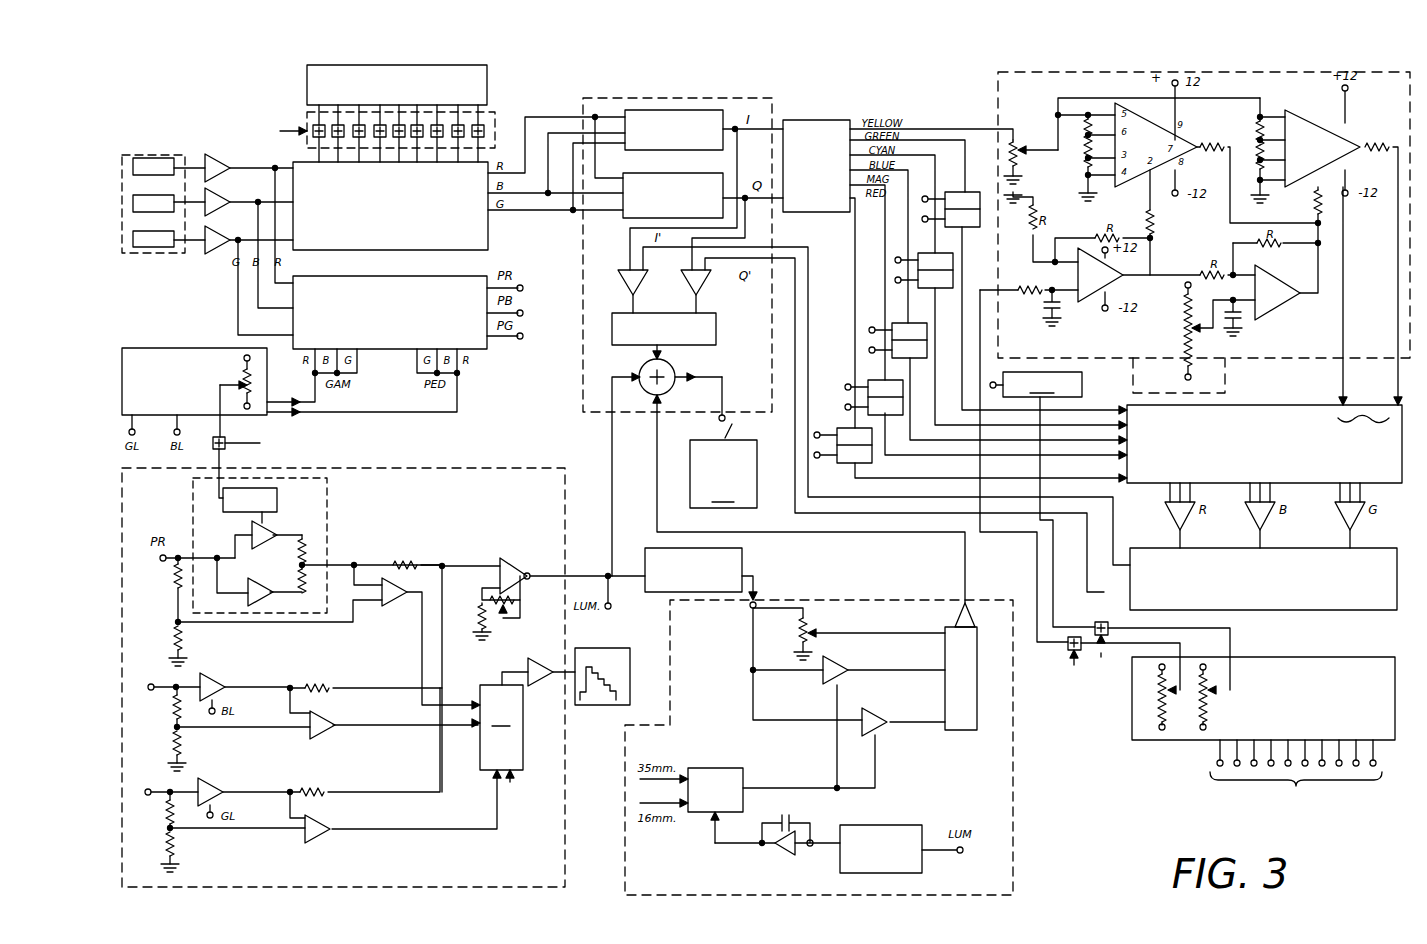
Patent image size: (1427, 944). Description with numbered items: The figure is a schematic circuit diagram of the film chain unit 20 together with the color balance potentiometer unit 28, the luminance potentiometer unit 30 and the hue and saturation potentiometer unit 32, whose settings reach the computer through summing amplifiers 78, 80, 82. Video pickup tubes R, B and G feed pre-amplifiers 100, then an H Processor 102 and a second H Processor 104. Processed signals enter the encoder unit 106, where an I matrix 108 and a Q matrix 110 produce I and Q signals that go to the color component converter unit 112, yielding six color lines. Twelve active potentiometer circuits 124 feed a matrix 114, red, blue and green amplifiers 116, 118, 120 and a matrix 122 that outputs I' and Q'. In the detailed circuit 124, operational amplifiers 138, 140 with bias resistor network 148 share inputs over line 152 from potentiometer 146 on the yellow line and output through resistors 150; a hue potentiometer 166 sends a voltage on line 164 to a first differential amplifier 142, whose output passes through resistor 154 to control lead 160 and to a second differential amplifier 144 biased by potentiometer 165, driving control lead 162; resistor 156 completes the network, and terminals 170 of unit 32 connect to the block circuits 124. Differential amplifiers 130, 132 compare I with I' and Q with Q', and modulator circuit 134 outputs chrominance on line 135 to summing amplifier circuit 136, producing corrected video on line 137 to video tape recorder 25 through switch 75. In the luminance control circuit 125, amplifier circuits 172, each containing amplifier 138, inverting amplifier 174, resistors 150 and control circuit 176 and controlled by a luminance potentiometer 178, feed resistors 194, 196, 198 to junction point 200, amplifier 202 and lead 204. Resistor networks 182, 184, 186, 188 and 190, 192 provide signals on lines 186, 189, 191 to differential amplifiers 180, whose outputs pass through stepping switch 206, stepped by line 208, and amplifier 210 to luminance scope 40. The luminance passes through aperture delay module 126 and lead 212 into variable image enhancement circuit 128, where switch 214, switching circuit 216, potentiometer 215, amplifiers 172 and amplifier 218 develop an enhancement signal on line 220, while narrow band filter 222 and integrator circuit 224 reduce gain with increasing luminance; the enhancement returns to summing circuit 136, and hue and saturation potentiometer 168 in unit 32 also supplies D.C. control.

The film chain unit 20 is at (211, 77).
The color balance potentiometer unit 28 is at (307, 89).
The summing amplifier 82 is at (496, 110).
The pre-amplifiers 100 is at (184, 139).
The H Processor 102 is at (375, 242).
The second H Processor 104 is at (375, 341).
The luminance potentiometer unit 30 is at (155, 409).
The luminance potentiometer 178 is at (255, 388).
The summing amplifier 80 is at (230, 440).
The control circuit 176 is at (260, 478).
The luminance control circuit 125 is at (376, 471).
The video frequency amplifier circuit 172 is at (327, 498).
The operational amplifier 138 is at (272, 532).
The identical resistors 150 is at (300, 568).
The inverting amplifier 174 is at (260, 607).
The resistor 182 is at (176, 602).
The resistor 184 is at (184, 639).
The resistor 186 is at (353, 624).
The differential amplifier 180 is at (399, 606).
The resistor 188 is at (181, 742).
The line 189 is at (252, 730).
The resistor 190 is at (164, 815).
The line 191 is at (250, 832).
The resistor 192 is at (180, 846).
The resistor 194 is at (410, 564).
The resistor 196 is at (324, 686).
The resistor 198 is at (336, 789).
The junction point 200 is at (446, 564).
The amplifier 202 is at (517, 559).
The output lead 204 is at (596, 571).
The stepping switch 206 is at (501, 727).
The control line 208 is at (514, 782).
The amplifier 210 is at (535, 662).
The luminance scope 40 is at (600, 708).
The encoder unit 106 is at (582, 395).
The I matrix 108 is at (645, 106).
The Q matrix 110 is at (624, 220).
The differential amplifier 130 is at (625, 288).
The differential amplifier 132 is at (707, 280).
The modulator circuit 134 is at (716, 326).
The line 135 is at (647, 351).
The summing amplifier circuit 136 is at (675, 362).
The line 137 is at (725, 386).
The switch 75 is at (740, 426).
The video tape recorder 25 is at (723, 474).
The color component converter unit 112 is at (805, 198).
The active potentiometer circuit 124 is at (900, 280).
The aperture delay module 126 is at (742, 553).
The output lead 212 is at (754, 580).
The potentiometer 215 is at (815, 620).
The amplifier 218 is at (972, 610).
The line 220 is at (862, 532).
The switch 214 is at (712, 768).
The electronic switching circuit 216 is at (968, 730).
The 2.5 MHz narrow band filter 222 is at (883, 825).
The integrator circuit 224 is at (774, 858).
The variable image enhancement circuit 128 is at (1018, 702).
The summing amplifier 78 is at (1098, 622).
The hue potentiometer 166 is at (1158, 700).
The saturation pot 168 is at (1218, 704).
The hue and saturation potentiometer unit 32 is at (1290, 726).
The potentiometer terminals 170 is at (1296, 771).
The matrix 114 is at (1243, 477).
The red amplifier 116 is at (1165, 514).
The blue amplifier 118 is at (1248, 516).
The green amplifier 120 is at (1337, 516).
The matrix 122 is at (1253, 606).
The operational amplifier 140 is at (1305, 154).
The first differential amplifier 142 is at (1086, 282).
The second differential amplifier 144 is at (1266, 301).
The potentiometer 146 is at (1038, 136).
The bias resistor network 148 is at (1084, 154).
The line 152 is at (1260, 98).
The resistor 154 is at (1160, 218).
The resistor 156 is at (1321, 215).
The control lead 160 is at (1142, 184).
The control lead 162 is at (1313, 197).
The line 164 is at (998, 338).
The bias potentiometer 165 is at (1208, 333).